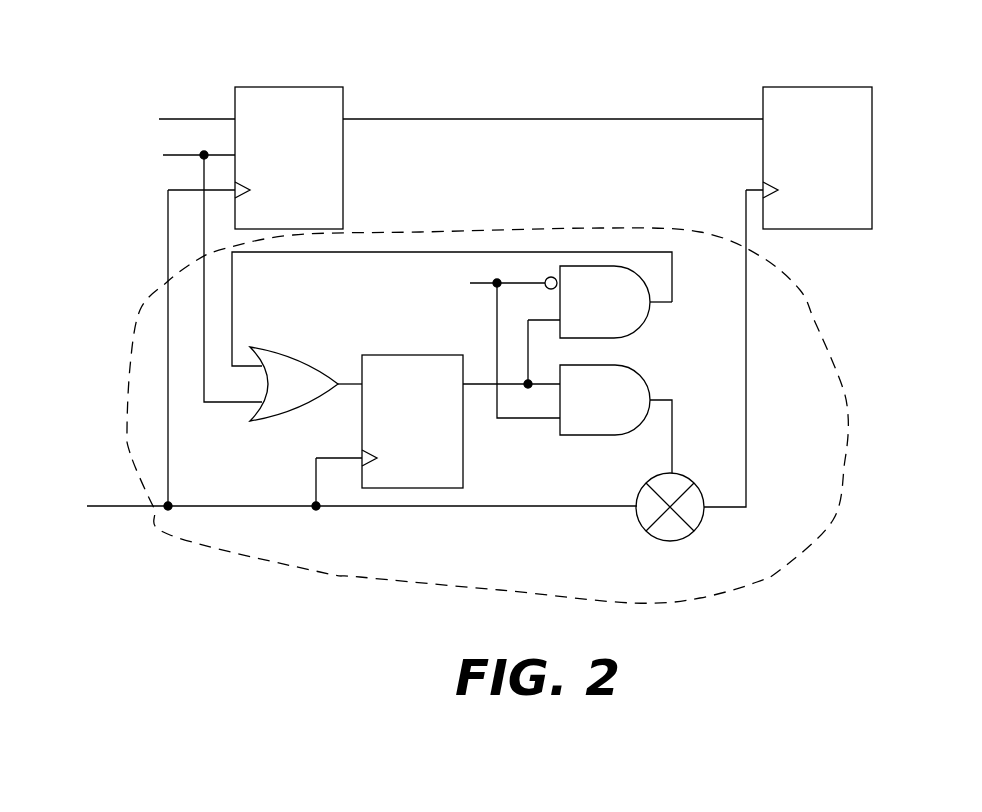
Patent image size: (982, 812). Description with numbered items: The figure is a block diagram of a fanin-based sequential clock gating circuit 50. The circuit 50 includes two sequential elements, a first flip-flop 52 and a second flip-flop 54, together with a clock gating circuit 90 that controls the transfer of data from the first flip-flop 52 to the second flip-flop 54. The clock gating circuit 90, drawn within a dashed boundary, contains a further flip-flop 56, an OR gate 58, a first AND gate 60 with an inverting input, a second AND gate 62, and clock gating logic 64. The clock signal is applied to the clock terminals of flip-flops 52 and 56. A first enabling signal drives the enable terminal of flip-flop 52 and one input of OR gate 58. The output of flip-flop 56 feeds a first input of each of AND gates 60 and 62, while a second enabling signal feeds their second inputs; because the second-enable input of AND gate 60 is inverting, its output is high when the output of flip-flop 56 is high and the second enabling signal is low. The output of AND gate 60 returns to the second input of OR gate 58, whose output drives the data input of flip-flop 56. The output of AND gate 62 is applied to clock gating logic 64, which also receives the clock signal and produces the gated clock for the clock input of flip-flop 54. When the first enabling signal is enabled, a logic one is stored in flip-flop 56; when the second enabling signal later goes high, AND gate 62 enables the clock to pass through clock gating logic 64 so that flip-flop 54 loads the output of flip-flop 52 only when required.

The fanin-based sequential clock gating circuit 50 is at (553, 72).
The flip-flop FF1 52 is at (343, 88).
The flip-flop FF2 54 is at (763, 87).
The flip-flop FFD 56 is at (413, 489).
The OR gate OR1 58 is at (305, 357).
The AND gate AND2 60 is at (596, 268).
The AND gate AND1 62 is at (560, 440).
The clock gating logic CG1 64 is at (637, 512).
The clock gating circuit 90 is at (812, 321).